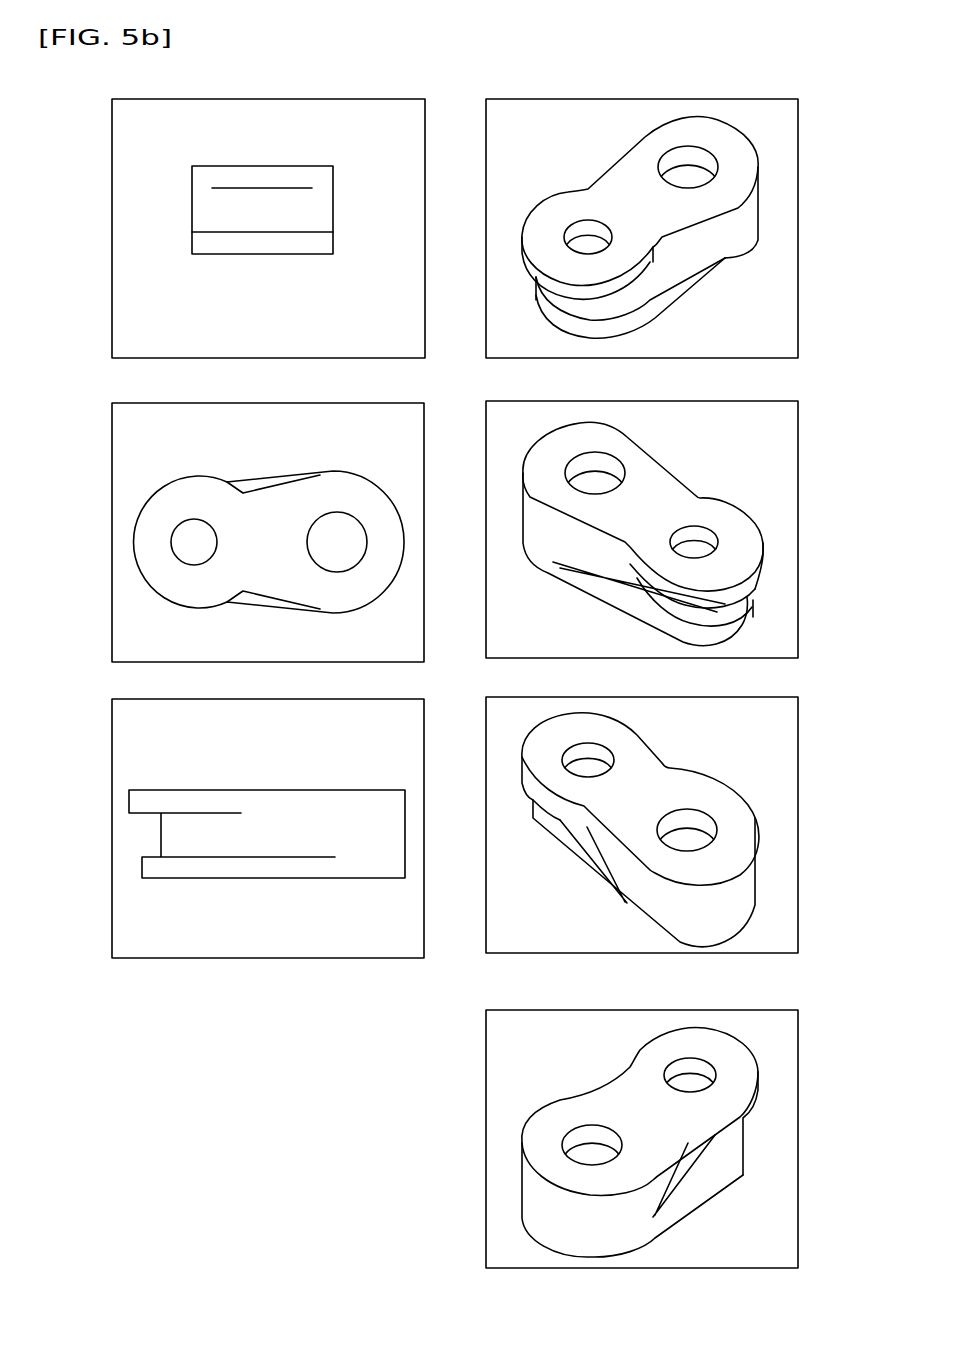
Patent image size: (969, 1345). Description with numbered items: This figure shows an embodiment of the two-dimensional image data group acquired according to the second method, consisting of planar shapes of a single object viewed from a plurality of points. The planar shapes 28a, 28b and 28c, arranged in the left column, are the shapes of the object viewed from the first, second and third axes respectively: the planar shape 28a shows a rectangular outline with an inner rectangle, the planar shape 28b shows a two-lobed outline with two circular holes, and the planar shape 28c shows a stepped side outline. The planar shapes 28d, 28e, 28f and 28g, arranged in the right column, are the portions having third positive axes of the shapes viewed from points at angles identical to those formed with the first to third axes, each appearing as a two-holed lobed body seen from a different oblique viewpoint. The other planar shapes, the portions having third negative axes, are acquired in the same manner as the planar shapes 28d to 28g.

The planar shape 28a is at (112, 173).
The planar shape 28b is at (112, 502).
The planar shape 28c is at (112, 769).
The planar shape 28d is at (798, 167).
The planar shape 28e is at (798, 482).
The planar shape 28f is at (798, 770).
The planar shape 28g is at (798, 1070).